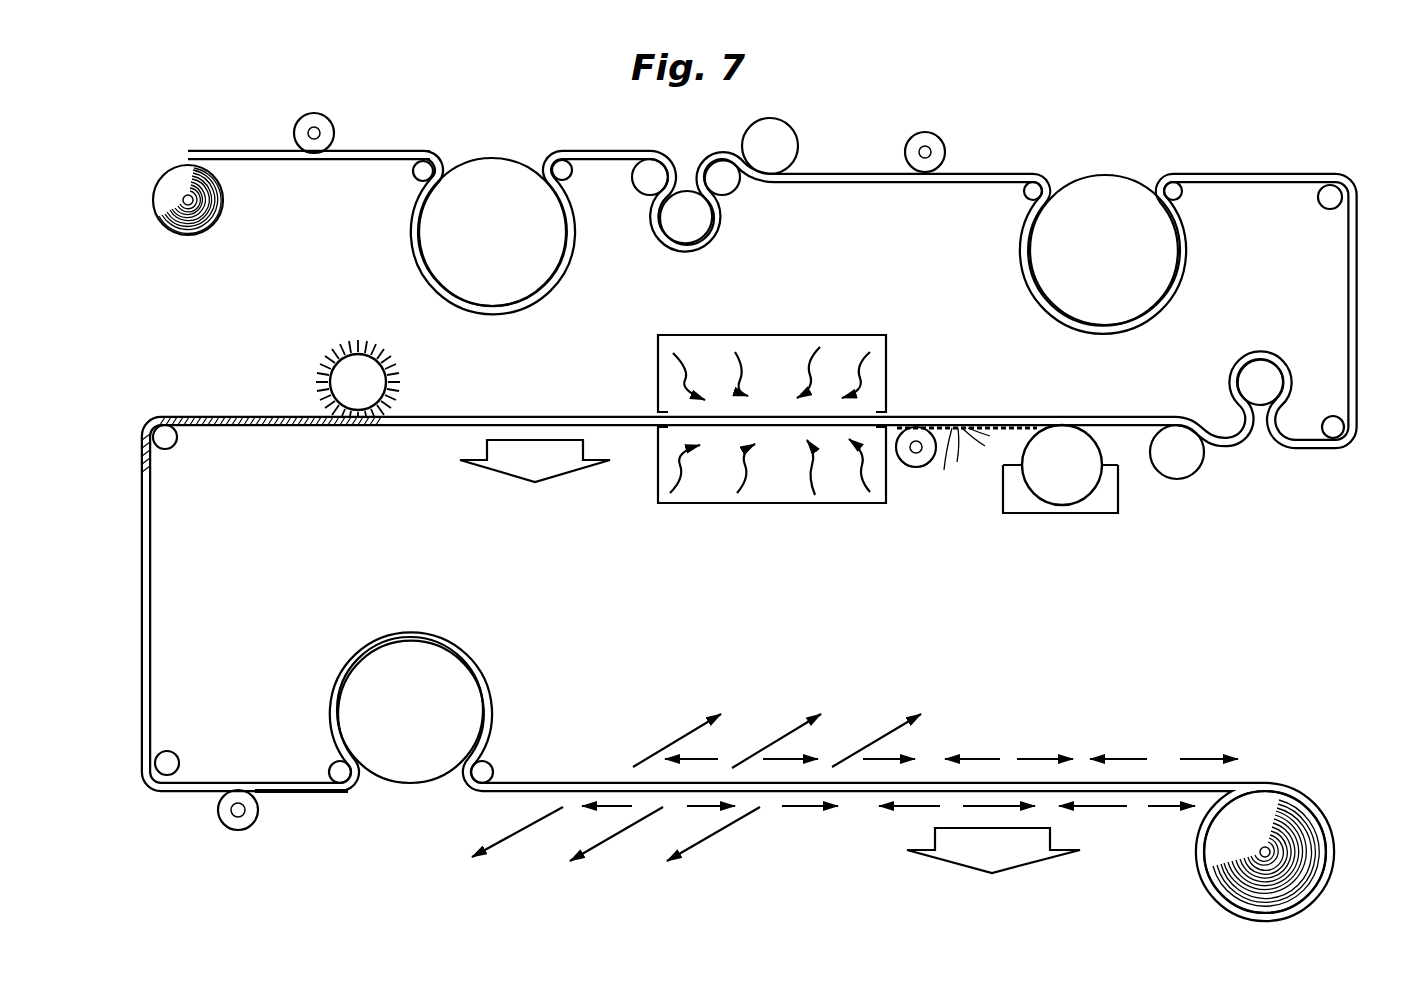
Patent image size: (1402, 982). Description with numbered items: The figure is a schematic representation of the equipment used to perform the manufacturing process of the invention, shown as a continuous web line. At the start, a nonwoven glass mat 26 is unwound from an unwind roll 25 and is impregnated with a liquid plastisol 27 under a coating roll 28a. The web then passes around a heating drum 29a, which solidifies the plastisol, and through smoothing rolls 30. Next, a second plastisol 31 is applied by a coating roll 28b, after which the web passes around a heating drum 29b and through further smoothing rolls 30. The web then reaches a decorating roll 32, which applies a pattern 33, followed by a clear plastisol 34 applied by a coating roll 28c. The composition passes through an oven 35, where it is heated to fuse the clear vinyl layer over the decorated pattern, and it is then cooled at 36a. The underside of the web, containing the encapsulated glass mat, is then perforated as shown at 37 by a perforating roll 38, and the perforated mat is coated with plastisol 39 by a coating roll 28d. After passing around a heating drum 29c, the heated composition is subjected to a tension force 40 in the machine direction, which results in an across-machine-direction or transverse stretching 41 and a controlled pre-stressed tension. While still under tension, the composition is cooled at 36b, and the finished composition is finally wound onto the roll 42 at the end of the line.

The unwind roll 25 is at (186, 195).
The nonwoven glass mat 26 is at (225, 153).
The liquid plastisol 27 is at (370, 153).
The coating roll 28a is at (327, 118).
The coating roll 28b is at (940, 140).
The coating roll 28c is at (917, 467).
The coating roll 28d is at (226, 823).
The heating drum 29a is at (485, 205).
The heating drum 29b is at (1087, 210).
The heating drum 29c is at (408, 742).
The smoothing rolls 30 is at (772, 143).
The second plastisol 31 is at (980, 172).
The decorating roll 32 is at (1070, 460).
The pattern 33 is at (957, 430).
The clear plastisol 34 is at (898, 434).
The oven 35 is at (836, 335).
The cooling 36a is at (548, 463).
The cooling 36b is at (1015, 857).
The perforation 37 is at (263, 415).
The perforating roll 38 is at (370, 388).
The plastisol 39 is at (303, 797).
The tension force 40 is at (710, 757).
The transverse stretching 41 is at (795, 723).
The roll 42 is at (1273, 840).